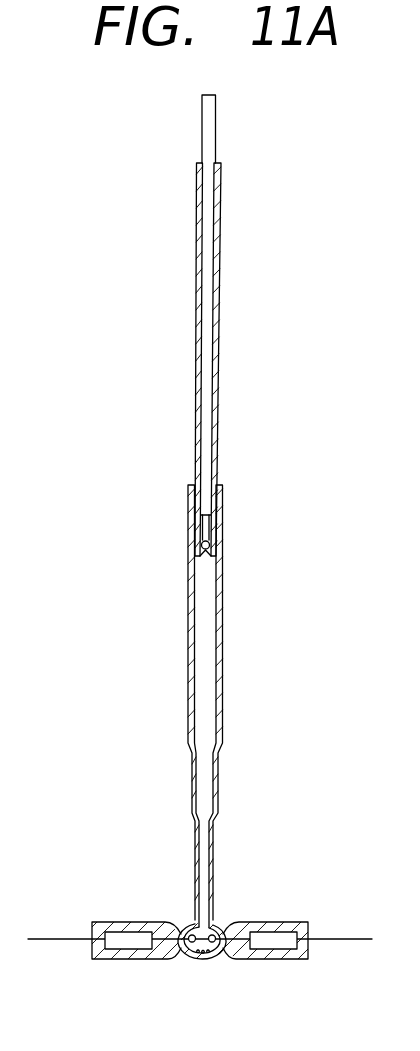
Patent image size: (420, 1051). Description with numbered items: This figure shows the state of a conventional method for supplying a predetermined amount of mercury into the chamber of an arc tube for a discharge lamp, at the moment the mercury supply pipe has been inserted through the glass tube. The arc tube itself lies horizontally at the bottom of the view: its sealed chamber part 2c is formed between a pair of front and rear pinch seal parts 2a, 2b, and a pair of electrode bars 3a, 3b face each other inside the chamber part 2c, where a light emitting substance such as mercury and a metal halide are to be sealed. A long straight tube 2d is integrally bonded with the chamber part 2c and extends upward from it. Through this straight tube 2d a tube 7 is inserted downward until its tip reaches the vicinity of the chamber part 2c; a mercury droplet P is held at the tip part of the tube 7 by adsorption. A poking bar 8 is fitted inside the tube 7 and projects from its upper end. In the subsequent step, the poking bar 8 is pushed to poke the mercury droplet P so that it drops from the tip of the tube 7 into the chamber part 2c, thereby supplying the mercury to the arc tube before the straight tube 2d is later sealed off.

The poking bar 8 is at (207, 372).
The tube 7 is at (219, 453).
The mercury droplet P is at (210, 548).
The straight tube 2d is at (212, 843).
The sealed chamber part 2c is at (203, 961).
The rear pinch seal part 2b is at (123, 961).
The front pinch seal part 2a is at (276, 961).
The electrode bar 3b is at (183, 922).
The electrode bar 3a is at (222, 921).